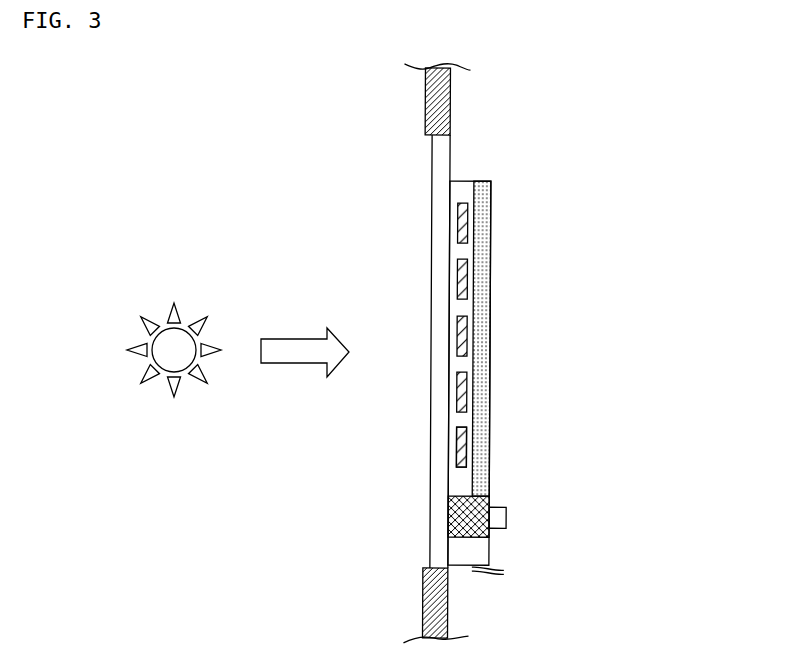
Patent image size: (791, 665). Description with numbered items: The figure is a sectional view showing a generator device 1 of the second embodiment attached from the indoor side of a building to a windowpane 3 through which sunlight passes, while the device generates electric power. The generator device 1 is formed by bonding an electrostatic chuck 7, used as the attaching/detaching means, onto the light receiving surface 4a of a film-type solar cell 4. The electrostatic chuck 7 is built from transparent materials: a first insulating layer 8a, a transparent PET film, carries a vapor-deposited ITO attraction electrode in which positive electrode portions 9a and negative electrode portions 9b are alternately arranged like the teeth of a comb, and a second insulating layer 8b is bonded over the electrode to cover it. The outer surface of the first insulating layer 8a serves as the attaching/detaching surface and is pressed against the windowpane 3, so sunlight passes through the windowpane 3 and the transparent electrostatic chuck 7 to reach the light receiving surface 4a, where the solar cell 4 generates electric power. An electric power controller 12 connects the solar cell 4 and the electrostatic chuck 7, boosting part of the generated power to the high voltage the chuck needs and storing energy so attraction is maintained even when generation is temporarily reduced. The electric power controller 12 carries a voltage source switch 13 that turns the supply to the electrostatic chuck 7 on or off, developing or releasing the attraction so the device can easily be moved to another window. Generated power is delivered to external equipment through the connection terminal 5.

The generator device 1 is at (527, 376).
The windowpane 3 is at (431, 158).
The film-type solar cell 4 is at (483, 218).
The light receiving surface 4a is at (472, 196).
The connection terminal 5 is at (490, 552).
The electrostatic chuck 7 is at (528, 335).
The first insulating layer 8a is at (450, 453).
The second insulating layer 8b is at (462, 433).
The positive electrode portions 9a is at (462, 280).
The negative electrode portions 9b is at (462, 335).
The electric power controller 12 is at (455, 512).
The voltage source switch 13 is at (507, 517).